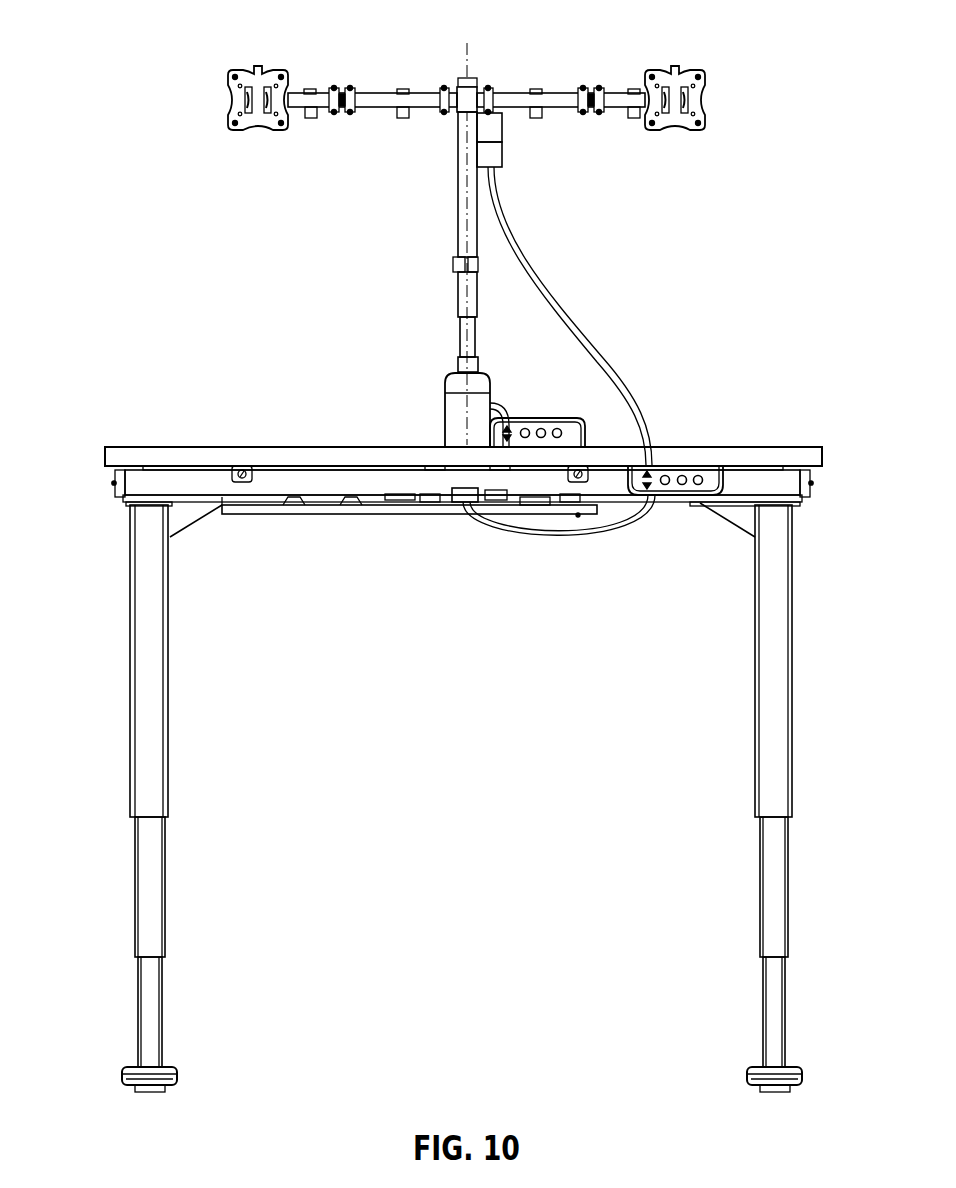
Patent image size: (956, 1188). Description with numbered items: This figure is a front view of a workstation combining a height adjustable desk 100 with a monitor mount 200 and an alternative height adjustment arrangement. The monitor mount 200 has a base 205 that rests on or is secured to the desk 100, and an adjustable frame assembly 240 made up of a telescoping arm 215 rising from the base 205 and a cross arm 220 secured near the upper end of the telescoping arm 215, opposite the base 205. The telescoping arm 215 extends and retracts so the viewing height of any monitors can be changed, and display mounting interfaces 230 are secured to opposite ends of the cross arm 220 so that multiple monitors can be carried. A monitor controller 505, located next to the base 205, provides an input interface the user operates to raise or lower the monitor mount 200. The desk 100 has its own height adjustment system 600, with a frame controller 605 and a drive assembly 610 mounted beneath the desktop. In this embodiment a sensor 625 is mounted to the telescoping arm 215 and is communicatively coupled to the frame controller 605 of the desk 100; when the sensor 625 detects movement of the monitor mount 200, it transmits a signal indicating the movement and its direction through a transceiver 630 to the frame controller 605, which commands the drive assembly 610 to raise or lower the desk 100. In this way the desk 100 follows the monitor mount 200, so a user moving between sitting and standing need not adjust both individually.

The height adjustable desk 100 is at (170, 422).
The monitor mount 200 is at (469, 244).
The cross arm 220 is at (507, 92).
The adjustable frame assembly 240 is at (414, 131).
The display mounting interface 230 is at (258, 131).
The telescoping arm 215 is at (450, 214).
The base 205 is at (445, 422).
The sensor 625 is at (497, 128).
The transceiver 630 is at (497, 153).
The controller 505 is at (541, 410).
The controller 605 is at (707, 478).
The height adjustment system 600 is at (651, 512).
The drive assembly 610 is at (456, 518).